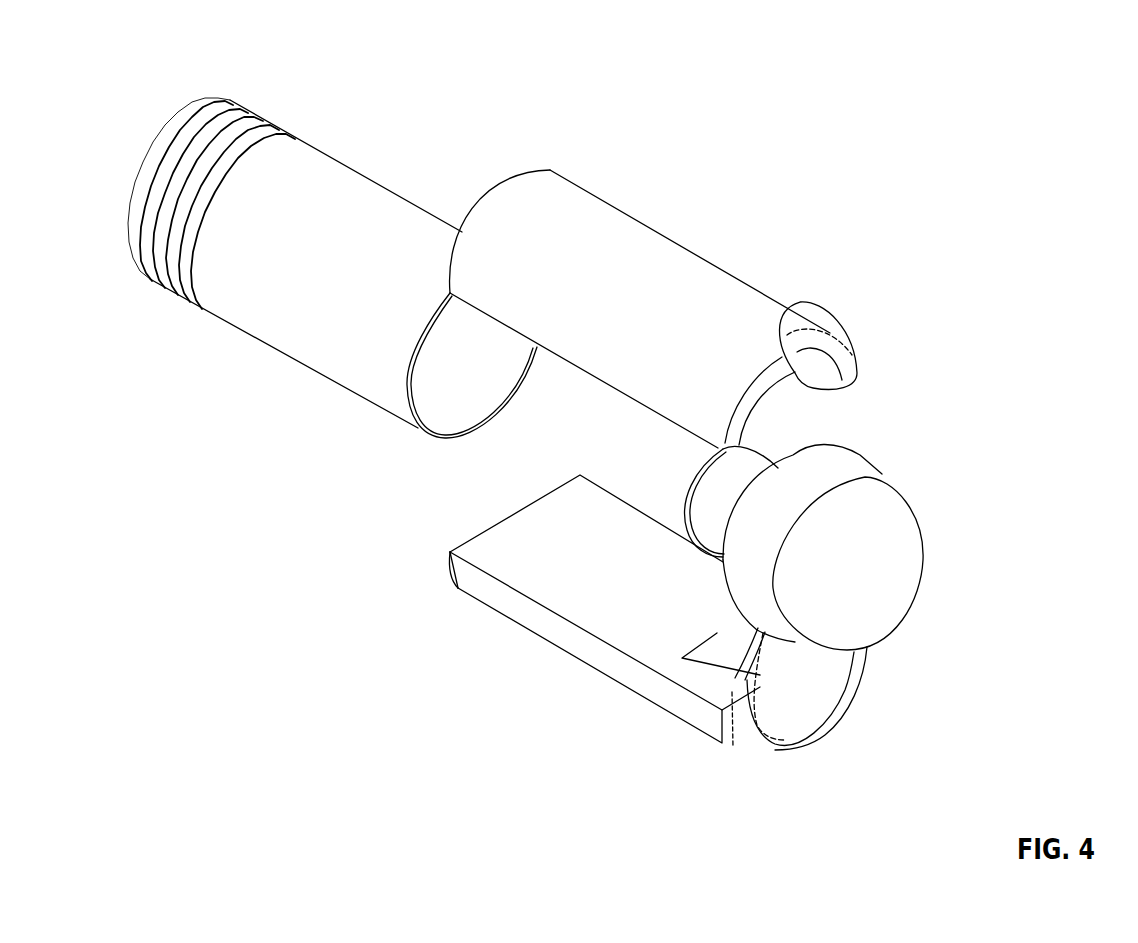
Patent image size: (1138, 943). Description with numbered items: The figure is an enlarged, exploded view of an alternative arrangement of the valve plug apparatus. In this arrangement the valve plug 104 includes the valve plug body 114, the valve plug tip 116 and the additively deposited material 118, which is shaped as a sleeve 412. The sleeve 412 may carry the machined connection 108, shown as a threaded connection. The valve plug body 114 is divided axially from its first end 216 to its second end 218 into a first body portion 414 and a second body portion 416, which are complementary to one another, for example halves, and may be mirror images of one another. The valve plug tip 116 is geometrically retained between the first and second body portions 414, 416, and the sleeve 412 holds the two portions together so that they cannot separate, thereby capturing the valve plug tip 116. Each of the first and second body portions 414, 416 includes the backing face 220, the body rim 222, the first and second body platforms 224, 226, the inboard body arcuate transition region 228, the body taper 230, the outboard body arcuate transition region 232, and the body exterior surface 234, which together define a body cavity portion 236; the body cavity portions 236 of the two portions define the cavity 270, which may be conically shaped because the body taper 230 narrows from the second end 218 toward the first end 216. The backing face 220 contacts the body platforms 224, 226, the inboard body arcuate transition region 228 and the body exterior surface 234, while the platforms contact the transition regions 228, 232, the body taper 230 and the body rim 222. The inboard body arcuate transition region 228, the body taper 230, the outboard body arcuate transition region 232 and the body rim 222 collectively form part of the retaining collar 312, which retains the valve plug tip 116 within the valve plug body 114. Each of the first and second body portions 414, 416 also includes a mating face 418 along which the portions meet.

The valve plug 104 is at (952, 110).
The machined connection 108 is at (233, 103).
The valve plug body 114 is at (794, 152).
The valve plug tip 116 is at (900, 550).
The additively deposited material 118 is at (350, 190).
The first end 216 is at (865, 769).
The second end 218 is at (471, 506).
The backing face 220 is at (723, 650).
The body rim 222 is at (813, 341).
The first body platform 224 is at (836, 396).
The second body platform 226 is at (708, 450).
The inboard body arcuate transition region 228 is at (730, 677).
The body taper 230 is at (741, 784).
The outboard body arcuate transition region 232 is at (820, 368).
The body exterior surface 234 is at (617, 284).
The body cavity portion 236 is at (771, 423).
The cavity 270 is at (776, 404).
The retaining collar 312 is at (866, 674).
The sleeve 412 is at (326, 261).
The first body portion 414 is at (668, 277).
The second body portion 416 is at (550, 625).
The mating face 418 is at (605, 390).